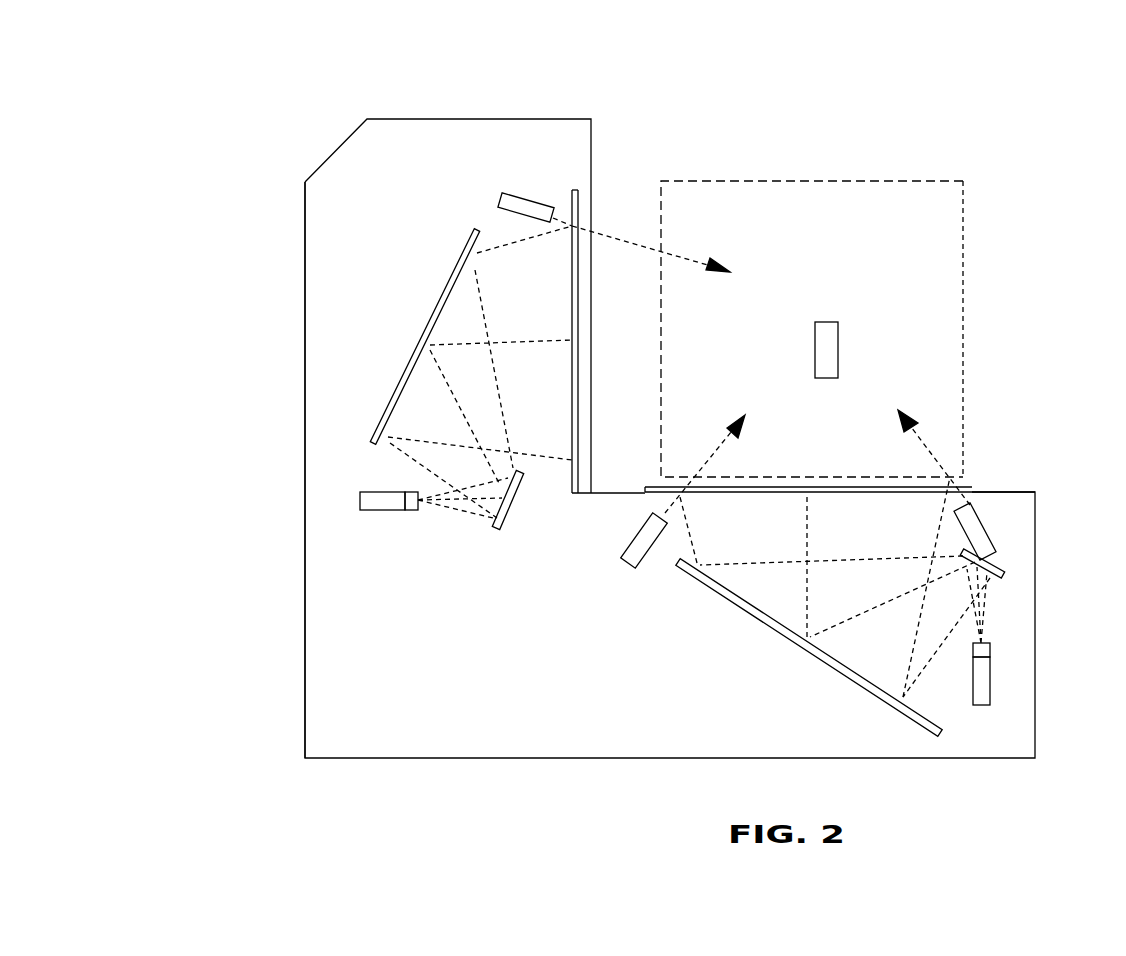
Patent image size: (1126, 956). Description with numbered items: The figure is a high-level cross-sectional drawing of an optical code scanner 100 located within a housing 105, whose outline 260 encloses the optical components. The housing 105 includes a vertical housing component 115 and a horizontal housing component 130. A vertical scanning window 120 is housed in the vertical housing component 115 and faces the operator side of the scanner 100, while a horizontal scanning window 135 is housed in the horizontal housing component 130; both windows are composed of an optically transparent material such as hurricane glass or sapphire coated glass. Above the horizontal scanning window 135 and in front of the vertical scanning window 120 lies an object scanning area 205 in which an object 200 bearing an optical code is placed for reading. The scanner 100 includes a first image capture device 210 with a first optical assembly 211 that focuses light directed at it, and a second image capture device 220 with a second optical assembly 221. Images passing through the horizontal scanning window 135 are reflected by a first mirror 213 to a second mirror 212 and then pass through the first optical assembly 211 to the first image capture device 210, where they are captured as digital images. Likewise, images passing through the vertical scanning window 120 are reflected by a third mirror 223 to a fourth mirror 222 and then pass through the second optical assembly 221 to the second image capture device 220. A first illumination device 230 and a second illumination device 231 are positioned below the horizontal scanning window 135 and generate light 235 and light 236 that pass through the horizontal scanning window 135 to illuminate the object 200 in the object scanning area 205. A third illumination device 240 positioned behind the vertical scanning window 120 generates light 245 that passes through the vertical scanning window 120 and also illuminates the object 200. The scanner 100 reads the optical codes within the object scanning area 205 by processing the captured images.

The scanner 100 is at (296, 48).
The housing 105 is at (354, 718).
The housing wall 260 is at (305, 472).
The vertical housing component 115 is at (573, 190).
The vertical scanning window 120 is at (572, 190).
The horizontal housing component 130 is at (1013, 490).
The horizontal scanning window 135 is at (973, 478).
The object scanning area 205 is at (851, 180).
The object 200 is at (840, 338).
The light 245 is at (620, 237).
The light 236 is at (930, 452).
The light 235 is at (672, 503).
The third illumination device 240 is at (527, 192).
The third mirror 223 is at (393, 393).
The fourth mirror 222 is at (505, 525).
The second image capture device 220 is at (375, 510).
The second optical assembly 221 is at (412, 510).
The first illumination device 230 is at (625, 567).
The second illumination device 231 is at (990, 530).
The first mirror 213 is at (753, 617).
The second mirror 212 is at (998, 572).
The first image capture device 210 is at (990, 690).
The first optical assembly 211 is at (990, 648).